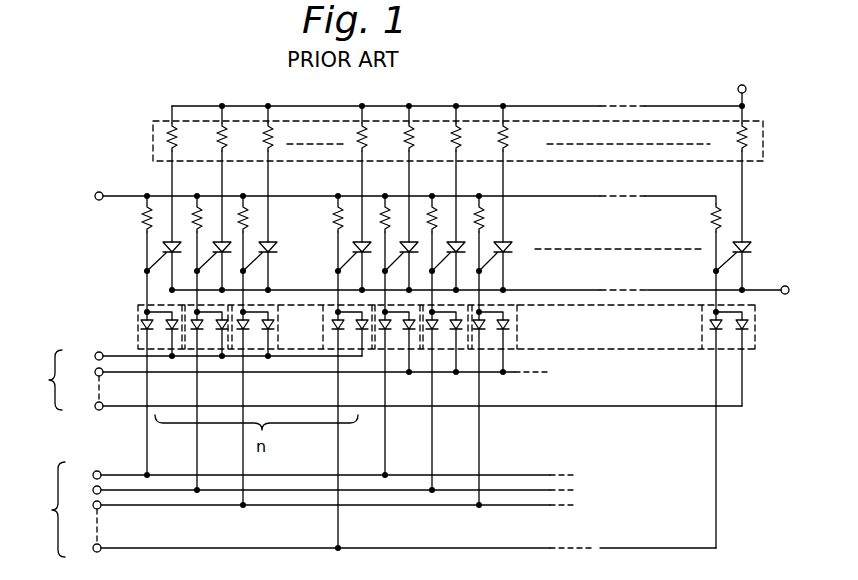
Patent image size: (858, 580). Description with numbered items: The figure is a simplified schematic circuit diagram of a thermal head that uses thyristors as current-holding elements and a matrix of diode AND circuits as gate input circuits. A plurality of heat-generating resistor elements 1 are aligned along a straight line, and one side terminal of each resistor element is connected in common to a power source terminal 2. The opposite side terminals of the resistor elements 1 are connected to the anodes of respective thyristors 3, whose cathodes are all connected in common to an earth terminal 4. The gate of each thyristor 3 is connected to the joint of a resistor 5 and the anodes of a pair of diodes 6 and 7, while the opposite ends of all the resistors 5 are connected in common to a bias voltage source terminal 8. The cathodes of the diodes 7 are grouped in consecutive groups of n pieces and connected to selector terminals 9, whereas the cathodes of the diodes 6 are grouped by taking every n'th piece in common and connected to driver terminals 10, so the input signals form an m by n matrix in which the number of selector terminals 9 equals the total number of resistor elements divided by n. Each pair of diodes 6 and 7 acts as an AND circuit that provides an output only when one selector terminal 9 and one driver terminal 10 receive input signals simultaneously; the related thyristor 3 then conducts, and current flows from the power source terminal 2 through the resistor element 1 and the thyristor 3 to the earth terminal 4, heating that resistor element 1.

The heat-generating resistor elements 1 is at (168, 132).
The power source terminal 2 is at (746, 89).
The thyristors 3 is at (163, 250).
The earth terminal 4 is at (786, 295).
The resistors 5 is at (143, 215).
The diodes 6 is at (140, 320).
The diodes 7 is at (165, 329).
The bias voltage source terminal 8 is at (95, 196).
The selector terminals 9 is at (386, 381).
The driver terminals 10 is at (368, 510).